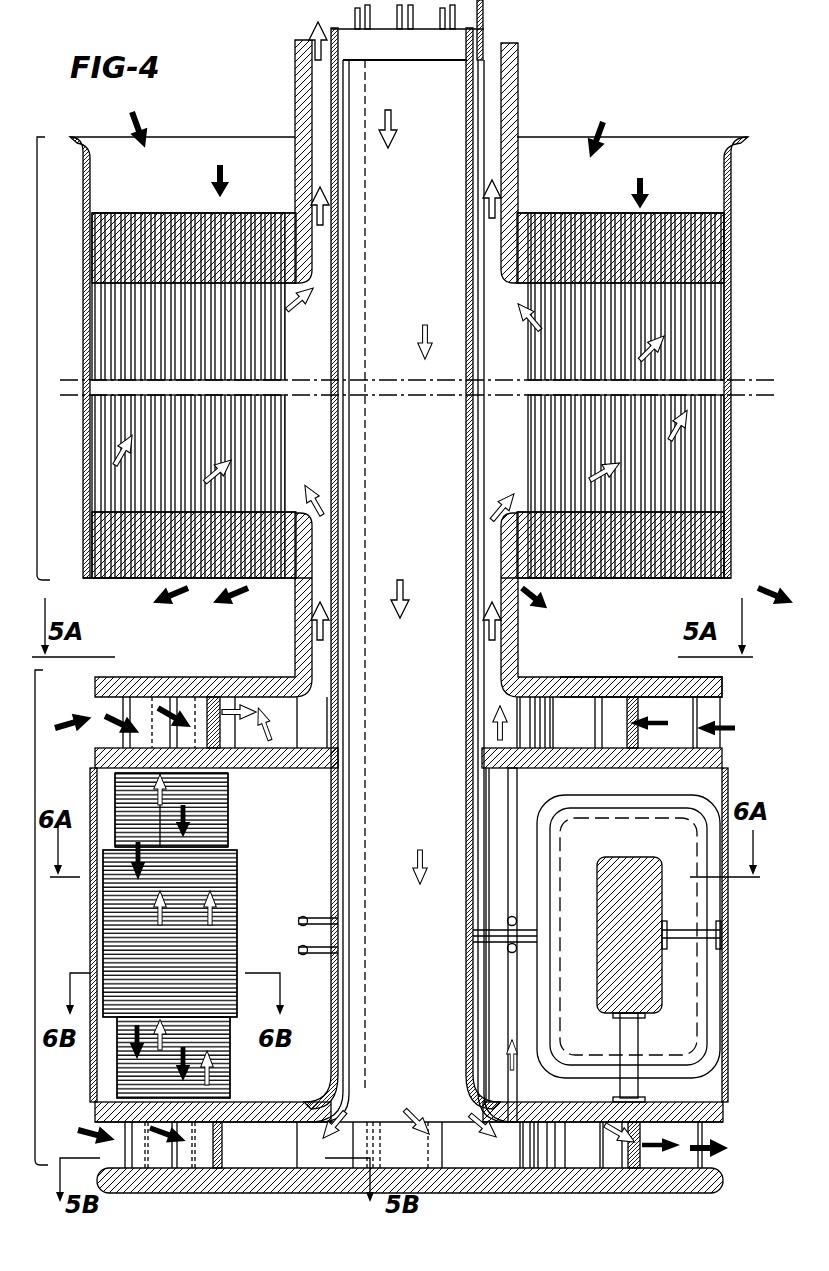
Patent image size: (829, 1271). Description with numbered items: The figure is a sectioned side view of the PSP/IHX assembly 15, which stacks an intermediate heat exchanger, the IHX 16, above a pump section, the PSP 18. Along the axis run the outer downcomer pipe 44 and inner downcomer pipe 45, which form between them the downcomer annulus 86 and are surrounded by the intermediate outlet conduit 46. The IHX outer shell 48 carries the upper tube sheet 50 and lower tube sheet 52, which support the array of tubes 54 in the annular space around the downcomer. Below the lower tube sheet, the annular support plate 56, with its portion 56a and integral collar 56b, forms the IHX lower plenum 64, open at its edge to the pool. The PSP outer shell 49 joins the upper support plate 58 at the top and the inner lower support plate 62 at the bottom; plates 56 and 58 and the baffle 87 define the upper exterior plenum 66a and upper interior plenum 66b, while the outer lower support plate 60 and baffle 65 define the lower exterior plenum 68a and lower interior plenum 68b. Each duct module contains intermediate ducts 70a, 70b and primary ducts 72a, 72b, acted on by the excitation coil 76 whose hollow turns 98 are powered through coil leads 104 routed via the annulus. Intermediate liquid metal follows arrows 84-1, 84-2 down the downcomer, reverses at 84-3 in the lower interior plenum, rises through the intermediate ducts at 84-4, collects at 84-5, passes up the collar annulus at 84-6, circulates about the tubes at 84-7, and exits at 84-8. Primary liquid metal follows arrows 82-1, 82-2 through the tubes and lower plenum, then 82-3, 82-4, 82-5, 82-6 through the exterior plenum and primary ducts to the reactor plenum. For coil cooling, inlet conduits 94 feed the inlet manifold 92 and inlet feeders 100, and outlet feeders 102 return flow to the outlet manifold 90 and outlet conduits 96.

The PSP/IHX assembly 15 is at (685, 118).
The IHX 16 is at (26, 358).
The PSP 18 is at (25, 917).
The outer downcomer pipe 44 is at (486, 38).
The inner downcomer pipe 45 is at (465, 88).
The intermediate outlet conduit 46 is at (518, 82).
The IHX outer shell 48 is at (732, 330).
The PSP outer shell 49 is at (728, 1000).
The upper tube sheet 50 is at (660, 213).
The lower tube sheet 52 is at (615, 585).
The tubes 54 is at (115, 356).
The support plate 56 is at (170, 665).
The support plate 56a is at (571, 677).
The collar 56b is at (520, 632).
The upper support plate 58 is at (722, 758).
The outer lower support plate 60 is at (570, 1193).
The inner lower support plate 62 is at (695, 1100).
The IHX lower plenum 64 is at (210, 641).
The baffle 65 is at (225, 1148).
The upper exterior plenum 66a is at (112, 743).
The upper interior plenum 66b is at (330, 738).
The lower exterior plenum 68a is at (110, 1170).
The lower interior plenum 68b is at (412, 1160).
The intermediate duct 70a is at (115, 798).
The intermediate duct 70b is at (232, 806).
The primary duct 72a is at (115, 778).
The primary duct 72b is at (232, 795).
The excitation coil 76 is at (574, 786).
The arrow 82-1 is at (143, 130).
The arrow 82-2 is at (250, 602).
The arrow 82-3 is at (70, 712).
The arrow 82-4 is at (200, 842).
The arrow 82-5 is at (118, 1055).
The arrow 82-6 is at (90, 1140).
The arrow 84-1 is at (398, 125).
The arrow 84-2 is at (398, 600).
The arrow 84-3 is at (410, 1120).
The arrow 84-4 is at (225, 1067).
The arrow 84-5 is at (252, 726).
The arrow 84-6 is at (325, 485).
The arrow 84-7 is at (150, 322).
The arrow 84-8 is at (308, 36).
The downcomer annulus 86 is at (466, 188).
The baffle 87 is at (215, 700).
The outlet manifold 90 is at (306, 916).
The inlet manifold 92 is at (297, 953).
The inlet conduit 94 is at (518, 1092).
The outlet conduit 96 is at (517, 830).
The hollow turns 98 is at (610, 808).
The inlet feeders 100 is at (530, 940).
The outlet feeders 102 is at (525, 930).
The coil leads 104 is at (365, 10).